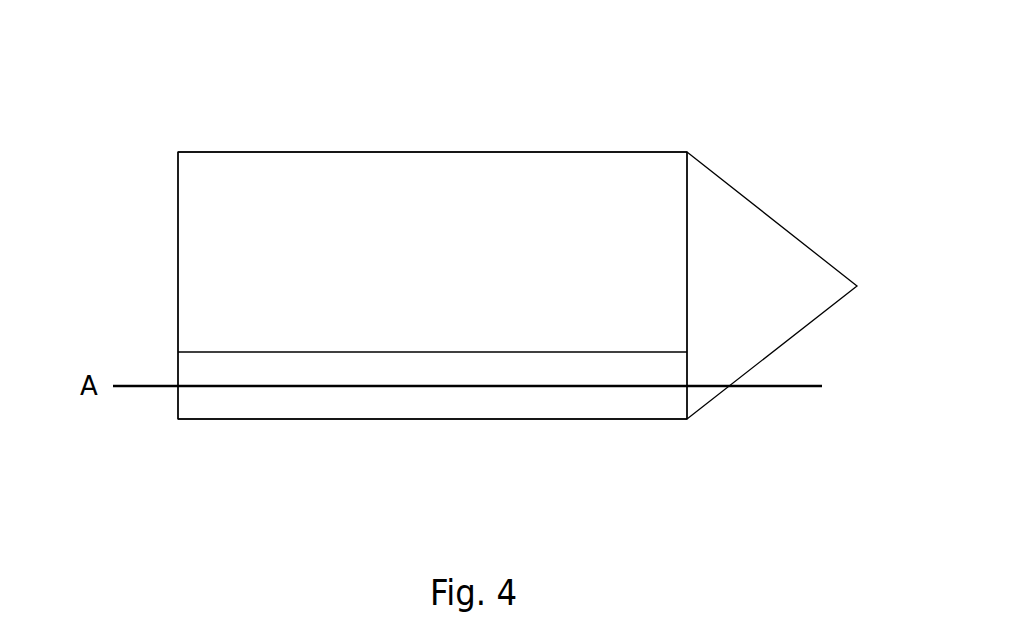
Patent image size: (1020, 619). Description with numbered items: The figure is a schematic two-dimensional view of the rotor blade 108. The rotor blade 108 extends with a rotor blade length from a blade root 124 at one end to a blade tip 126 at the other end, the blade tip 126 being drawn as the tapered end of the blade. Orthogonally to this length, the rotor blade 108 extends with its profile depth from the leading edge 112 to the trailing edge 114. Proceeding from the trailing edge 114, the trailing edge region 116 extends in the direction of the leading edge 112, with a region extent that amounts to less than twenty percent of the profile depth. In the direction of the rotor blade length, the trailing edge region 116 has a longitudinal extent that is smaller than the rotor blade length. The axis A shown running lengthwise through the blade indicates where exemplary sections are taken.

The rotor blade 108 is at (205, 108).
The leading edge 112 is at (469, 135).
The trailing edge 114 is at (424, 435).
The trailing edge region 116 is at (475, 408).
The blade root 124 is at (139, 260).
The blade tip 126 is at (855, 252).